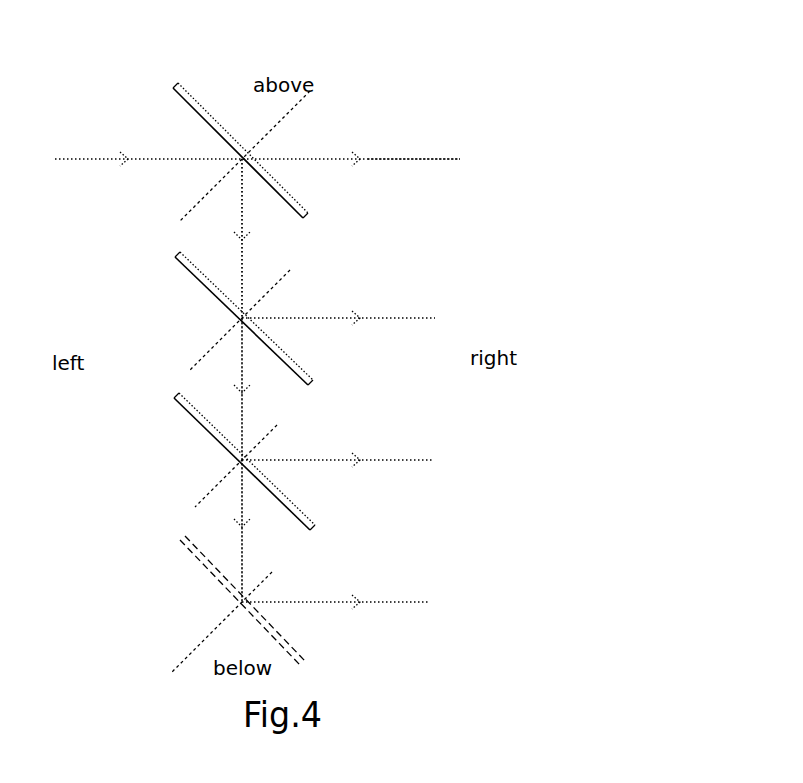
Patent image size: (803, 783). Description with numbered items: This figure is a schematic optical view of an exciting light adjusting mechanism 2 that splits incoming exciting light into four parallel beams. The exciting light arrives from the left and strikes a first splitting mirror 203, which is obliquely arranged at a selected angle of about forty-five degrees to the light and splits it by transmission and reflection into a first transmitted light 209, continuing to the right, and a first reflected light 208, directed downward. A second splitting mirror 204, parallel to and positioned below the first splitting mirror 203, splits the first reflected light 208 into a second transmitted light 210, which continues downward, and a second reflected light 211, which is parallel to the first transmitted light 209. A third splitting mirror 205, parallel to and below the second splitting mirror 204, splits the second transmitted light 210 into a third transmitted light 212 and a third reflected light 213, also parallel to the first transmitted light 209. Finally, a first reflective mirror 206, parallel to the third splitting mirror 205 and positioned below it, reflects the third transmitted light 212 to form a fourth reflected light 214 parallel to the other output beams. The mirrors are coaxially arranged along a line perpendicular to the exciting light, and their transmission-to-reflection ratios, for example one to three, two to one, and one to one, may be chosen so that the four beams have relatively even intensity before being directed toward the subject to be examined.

The exciting light adjusting mechanism 2 is at (243, 88).
The first splitting mirror 203 is at (197, 107).
The second splitting mirror 204 is at (188, 260).
The third splitting mirror 205 is at (188, 405).
The first reflective mirror 206 is at (187, 537).
The first reflected light 208 is at (247, 258).
The first transmitted light 209 is at (368, 161).
The second transmitted light 210 is at (243, 397).
The second reflected light 211 is at (373, 318).
The third transmitted light 212 is at (245, 537).
The third reflected light 213 is at (378, 460).
The fourth reflected light 214 is at (383, 602).